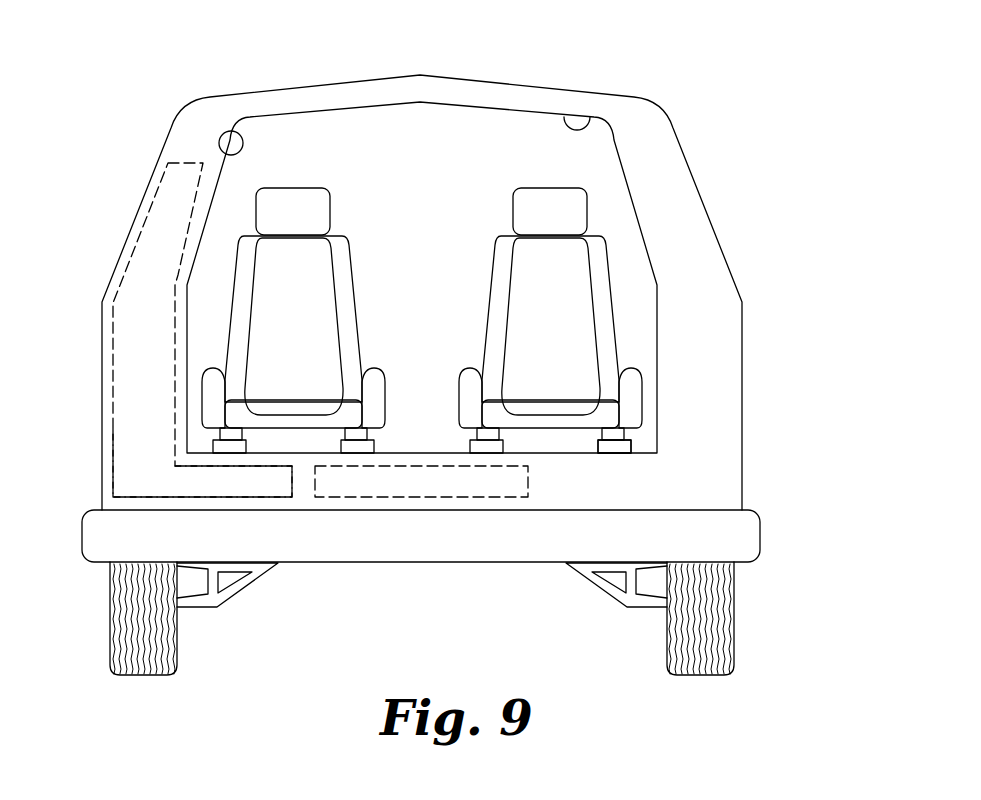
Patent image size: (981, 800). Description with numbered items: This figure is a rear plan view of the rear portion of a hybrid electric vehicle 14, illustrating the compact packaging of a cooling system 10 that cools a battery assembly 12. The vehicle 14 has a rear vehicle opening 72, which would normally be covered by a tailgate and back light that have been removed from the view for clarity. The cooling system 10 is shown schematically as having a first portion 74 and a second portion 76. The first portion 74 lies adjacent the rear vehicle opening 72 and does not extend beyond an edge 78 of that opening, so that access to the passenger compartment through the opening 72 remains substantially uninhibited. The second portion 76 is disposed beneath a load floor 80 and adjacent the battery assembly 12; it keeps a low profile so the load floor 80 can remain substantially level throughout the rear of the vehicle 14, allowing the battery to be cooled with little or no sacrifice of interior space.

The cooling system 10 is at (413, 357).
The battery assembly 12 is at (437, 497).
The hybrid electric vehicle 14 is at (675, 129).
The rear vehicle opening 72 is at (590, 118).
The first portion 74 is at (126, 266).
The second portion 76 is at (264, 497).
The edge 78 is at (233, 148).
The load floor 80 is at (573, 452).